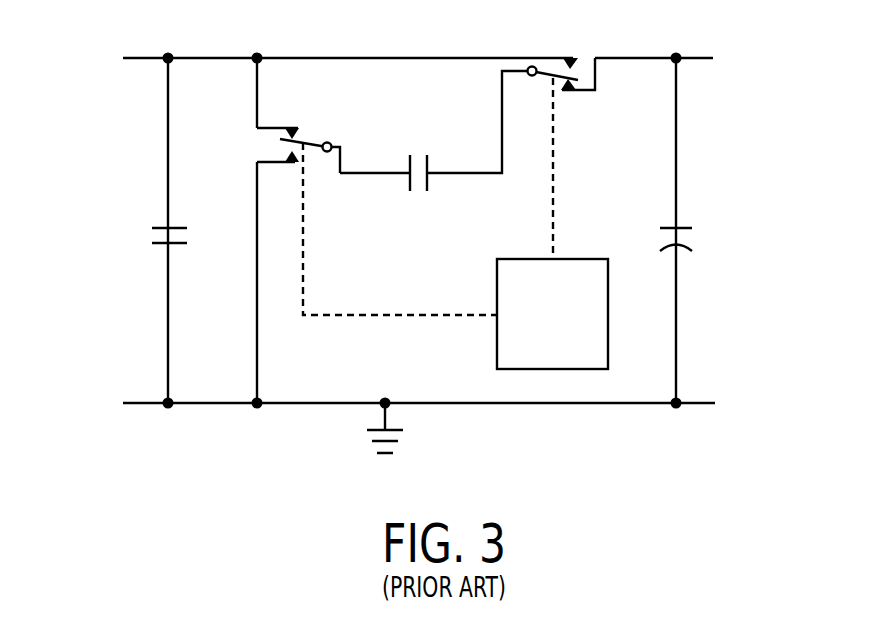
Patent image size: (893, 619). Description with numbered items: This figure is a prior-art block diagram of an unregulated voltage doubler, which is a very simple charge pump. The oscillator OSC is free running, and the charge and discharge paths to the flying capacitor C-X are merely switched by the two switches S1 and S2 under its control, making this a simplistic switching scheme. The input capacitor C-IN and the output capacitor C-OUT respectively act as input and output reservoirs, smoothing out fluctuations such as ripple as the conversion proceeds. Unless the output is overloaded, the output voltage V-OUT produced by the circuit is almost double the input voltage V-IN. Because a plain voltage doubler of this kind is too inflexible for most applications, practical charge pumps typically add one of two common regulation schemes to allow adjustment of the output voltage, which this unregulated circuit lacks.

The input voltage V-IN is at (98, 58).
The output voltage V-OUT is at (753, 59).
The input capacitor C-IN is at (143, 231).
The output capacitor C-OUT is at (713, 241).
The flying capacitor C-X is at (433, 131).
The switch S1 is at (284, 150).
The switch S2 is at (562, 58).
The oscillator OSC is at (455, 223).